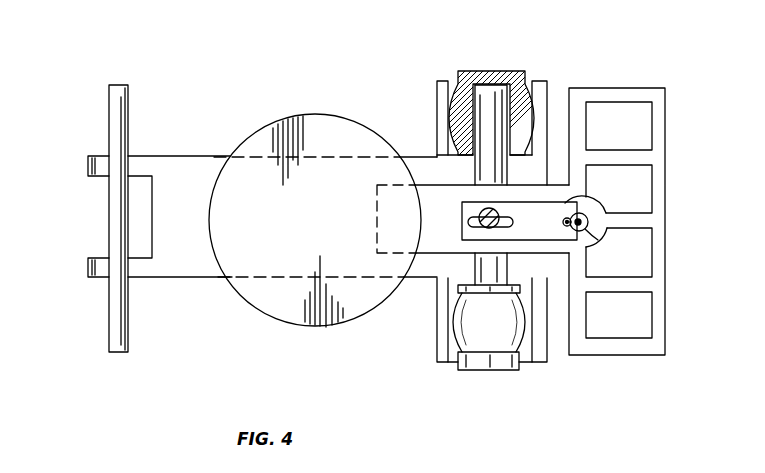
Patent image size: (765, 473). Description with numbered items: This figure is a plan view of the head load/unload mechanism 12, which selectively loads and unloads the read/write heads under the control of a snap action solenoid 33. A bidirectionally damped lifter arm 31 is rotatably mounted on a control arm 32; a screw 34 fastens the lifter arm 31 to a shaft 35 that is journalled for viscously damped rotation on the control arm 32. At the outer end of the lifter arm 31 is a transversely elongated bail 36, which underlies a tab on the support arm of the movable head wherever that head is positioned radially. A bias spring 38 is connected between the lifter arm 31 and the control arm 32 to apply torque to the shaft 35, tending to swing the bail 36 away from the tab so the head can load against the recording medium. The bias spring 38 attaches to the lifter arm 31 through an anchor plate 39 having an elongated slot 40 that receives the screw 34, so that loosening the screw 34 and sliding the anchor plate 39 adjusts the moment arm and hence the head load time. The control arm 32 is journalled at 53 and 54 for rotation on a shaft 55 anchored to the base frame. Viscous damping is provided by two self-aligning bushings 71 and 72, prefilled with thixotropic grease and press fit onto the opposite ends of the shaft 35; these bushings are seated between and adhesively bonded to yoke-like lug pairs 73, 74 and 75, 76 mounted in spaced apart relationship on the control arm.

The head load/unload mechanism 12 is at (355, 76).
The lifter arm 31 is at (557, 248).
The control arm 32 is at (198, 268).
The snap action solenoid 33 is at (268, 138).
The screw 34 is at (463, 207).
The shaft 35 is at (483, 162).
The bail 36 is at (658, 122).
The bias spring 38 is at (596, 240).
The anchor plate 39 is at (590, 192).
The elongated slot 40 is at (472, 223).
The journal 53 is at (113, 250).
The journal 54 is at (110, 177).
The shaft 55 is at (123, 326).
The self-aligning bushing 71 is at (500, 71).
The self-aligning bushing 72 is at (478, 338).
The lug 73 is at (542, 93).
The lug 74 is at (438, 97).
The lug 75 is at (538, 355).
The lug 76 is at (437, 347).